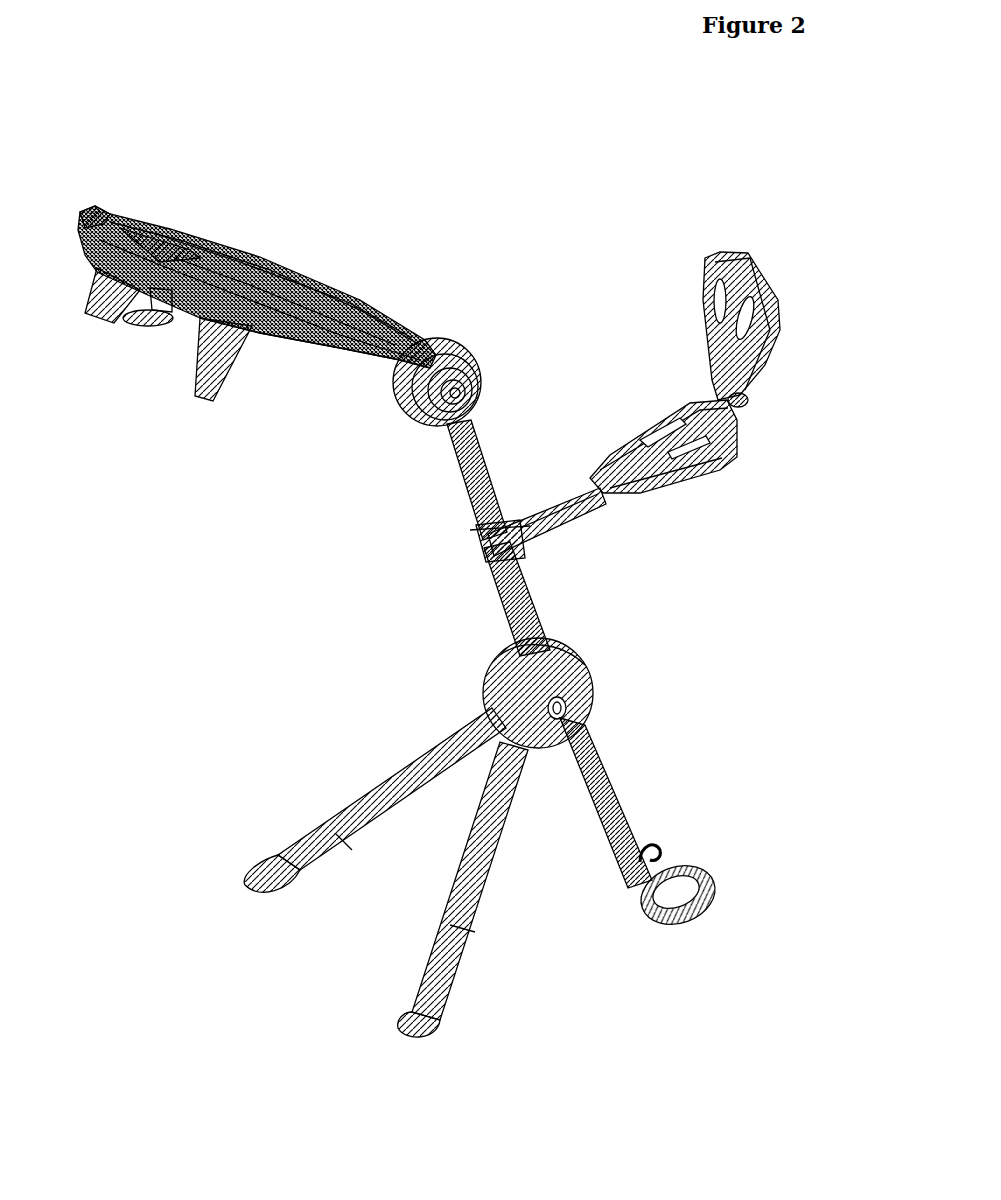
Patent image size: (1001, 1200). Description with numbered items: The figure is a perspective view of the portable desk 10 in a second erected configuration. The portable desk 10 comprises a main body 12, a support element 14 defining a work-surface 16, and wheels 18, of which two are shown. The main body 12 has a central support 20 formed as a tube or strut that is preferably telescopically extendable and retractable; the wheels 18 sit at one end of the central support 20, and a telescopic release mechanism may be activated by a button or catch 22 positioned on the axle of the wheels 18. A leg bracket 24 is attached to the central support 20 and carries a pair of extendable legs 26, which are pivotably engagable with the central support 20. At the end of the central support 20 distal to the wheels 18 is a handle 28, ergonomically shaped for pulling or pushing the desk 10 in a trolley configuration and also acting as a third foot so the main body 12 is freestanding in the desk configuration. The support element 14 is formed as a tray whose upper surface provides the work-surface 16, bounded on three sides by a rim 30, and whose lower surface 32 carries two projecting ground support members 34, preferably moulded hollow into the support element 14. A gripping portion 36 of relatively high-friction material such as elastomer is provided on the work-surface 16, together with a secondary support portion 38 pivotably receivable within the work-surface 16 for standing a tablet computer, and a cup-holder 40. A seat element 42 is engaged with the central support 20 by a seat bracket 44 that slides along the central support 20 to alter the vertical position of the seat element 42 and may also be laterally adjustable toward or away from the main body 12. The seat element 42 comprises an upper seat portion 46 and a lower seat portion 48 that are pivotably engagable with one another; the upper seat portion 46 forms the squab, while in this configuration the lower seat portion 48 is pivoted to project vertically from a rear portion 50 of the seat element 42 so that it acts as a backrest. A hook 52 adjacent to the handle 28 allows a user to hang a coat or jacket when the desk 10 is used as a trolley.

The portable desk 10 is at (607, 218).
The main body 12 is at (478, 600).
The support element 14 is at (213, 252).
The work-surface 16 is at (278, 293).
The wheel 18 is at (480, 360).
The central support 20 is at (605, 778).
The button or catch 22 is at (447, 400).
The leg bracket 24 is at (580, 680).
The extendable legs 26 is at (350, 817).
The handle 28 is at (689, 920).
The rim 30 is at (92, 208).
The lower surface 32 is at (276, 340).
The ground support member 34 is at (88, 324).
The gripping portion 36 is at (256, 270).
The secondary support portion 38 is at (200, 283).
The cup-holder 40 is at (157, 328).
The seat element 42 is at (660, 378).
The seat bracket 44 is at (486, 545).
The upper seat portion 46 is at (645, 425).
The lower seat portion 48 is at (747, 284).
The rear portion 50 is at (766, 404).
The hook 52 is at (660, 848).